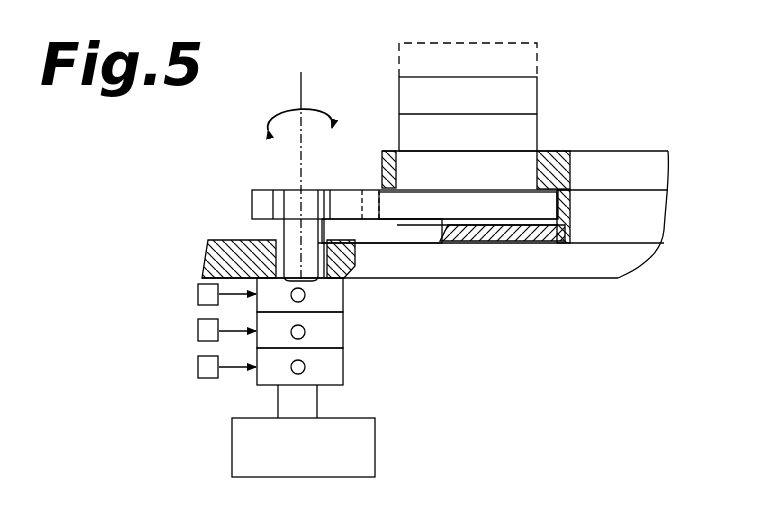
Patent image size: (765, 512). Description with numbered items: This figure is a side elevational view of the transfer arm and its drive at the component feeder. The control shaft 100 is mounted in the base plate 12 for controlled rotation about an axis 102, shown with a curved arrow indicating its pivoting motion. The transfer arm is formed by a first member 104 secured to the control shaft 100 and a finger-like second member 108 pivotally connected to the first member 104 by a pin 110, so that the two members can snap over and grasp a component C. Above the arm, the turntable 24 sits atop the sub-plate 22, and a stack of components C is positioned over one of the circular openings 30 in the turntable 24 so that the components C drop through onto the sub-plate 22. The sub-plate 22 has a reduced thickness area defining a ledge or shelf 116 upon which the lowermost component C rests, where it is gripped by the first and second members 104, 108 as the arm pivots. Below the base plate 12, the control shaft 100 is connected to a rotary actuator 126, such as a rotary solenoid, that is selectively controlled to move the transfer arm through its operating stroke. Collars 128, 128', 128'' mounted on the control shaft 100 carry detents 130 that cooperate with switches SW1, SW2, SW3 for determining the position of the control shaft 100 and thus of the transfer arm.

The axis 102 is at (306, 90).
The first member 104 is at (266, 197).
The pin 110 is at (372, 188).
The component C is at (540, 100).
The circular openings 30 is at (540, 150).
The turntable 24 is at (640, 178).
The sub-plate 22 is at (636, 223).
The second member 108 is at (476, 217).
The control shaft 100 is at (282, 231).
The base plate 12 is at (498, 272).
The shelf 116 is at (573, 228).
The detents 130 is at (306, 293).
The collar 128 is at (329, 300).
The collar 128' is at (331, 331).
The collar 128'' is at (334, 366).
The rotary actuator 126 is at (318, 456).
The switch SW1 is at (197, 292).
The switch SW2 is at (197, 332).
The switch SW3 is at (197, 368).